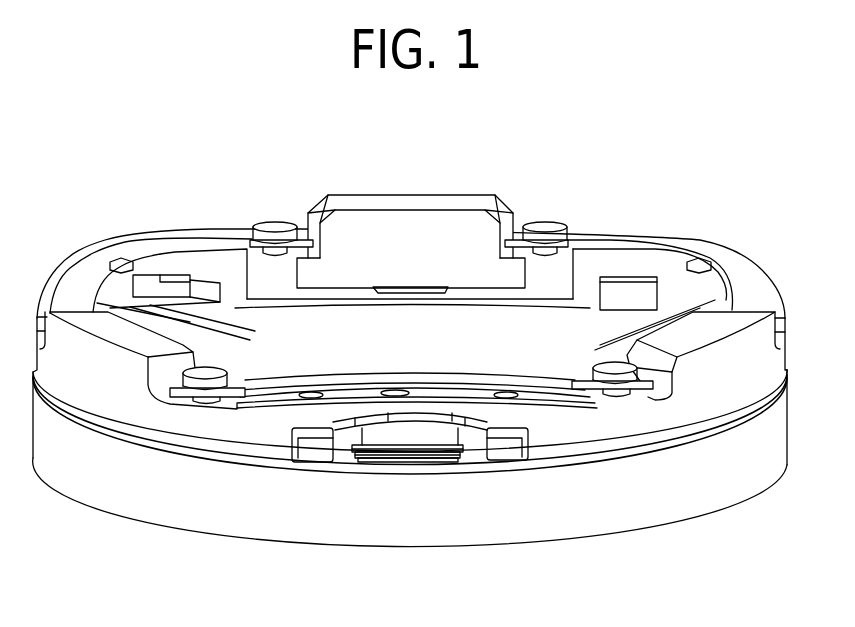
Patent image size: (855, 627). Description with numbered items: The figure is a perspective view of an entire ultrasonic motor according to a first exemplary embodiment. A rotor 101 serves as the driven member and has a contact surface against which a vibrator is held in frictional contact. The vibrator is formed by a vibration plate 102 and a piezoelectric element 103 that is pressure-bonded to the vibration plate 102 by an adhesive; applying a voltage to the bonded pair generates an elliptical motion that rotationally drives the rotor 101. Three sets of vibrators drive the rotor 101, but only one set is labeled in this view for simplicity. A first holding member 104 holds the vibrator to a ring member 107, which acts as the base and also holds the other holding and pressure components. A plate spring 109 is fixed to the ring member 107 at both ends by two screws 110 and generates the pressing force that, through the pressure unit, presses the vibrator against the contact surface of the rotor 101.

The rotor 101 is at (190, 522).
The vibration plate 102 is at (383, 460).
The piezoelectric element 103 is at (428, 458).
The first holding member 104 is at (477, 447).
The ring member 107 is at (565, 433).
The plate spring 109 is at (486, 379).
The screw 110 is at (232, 353).